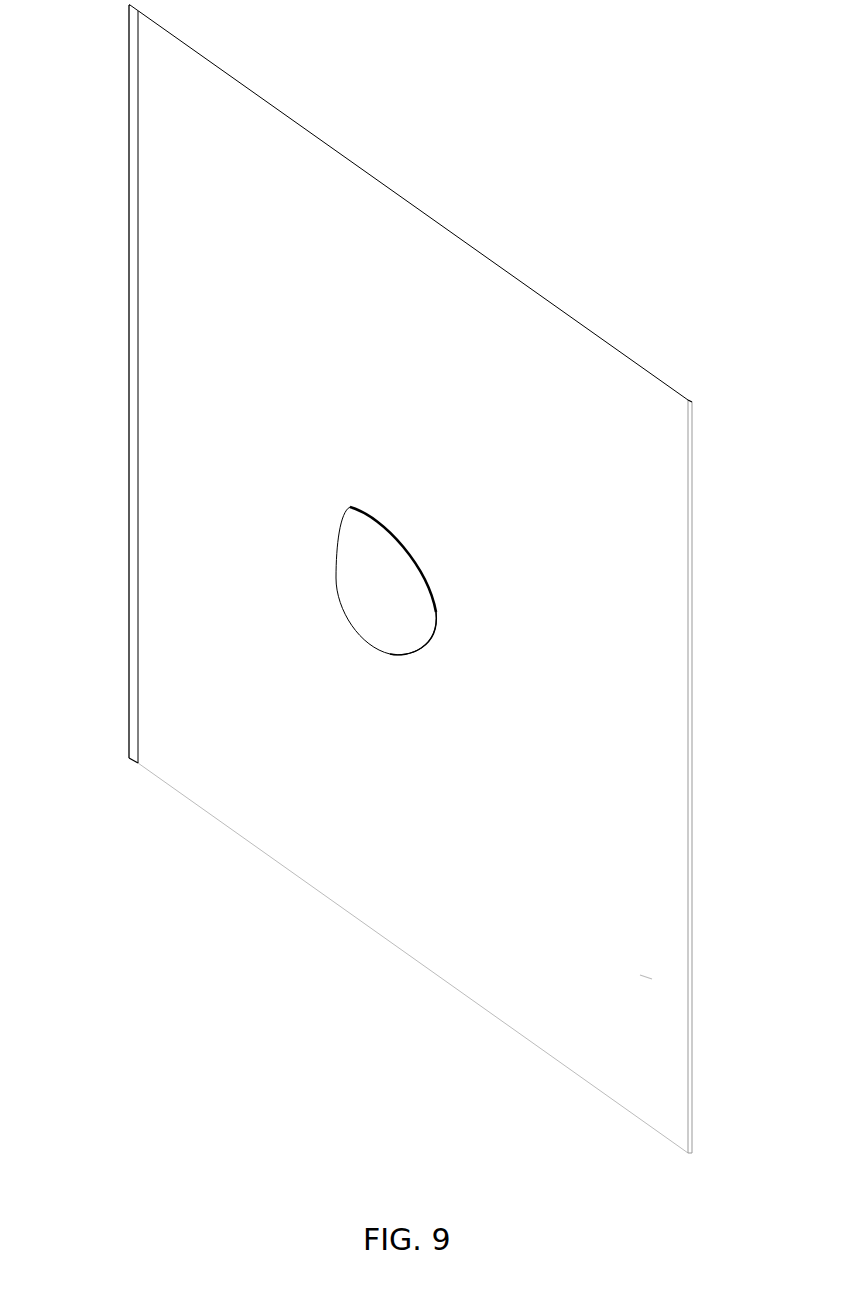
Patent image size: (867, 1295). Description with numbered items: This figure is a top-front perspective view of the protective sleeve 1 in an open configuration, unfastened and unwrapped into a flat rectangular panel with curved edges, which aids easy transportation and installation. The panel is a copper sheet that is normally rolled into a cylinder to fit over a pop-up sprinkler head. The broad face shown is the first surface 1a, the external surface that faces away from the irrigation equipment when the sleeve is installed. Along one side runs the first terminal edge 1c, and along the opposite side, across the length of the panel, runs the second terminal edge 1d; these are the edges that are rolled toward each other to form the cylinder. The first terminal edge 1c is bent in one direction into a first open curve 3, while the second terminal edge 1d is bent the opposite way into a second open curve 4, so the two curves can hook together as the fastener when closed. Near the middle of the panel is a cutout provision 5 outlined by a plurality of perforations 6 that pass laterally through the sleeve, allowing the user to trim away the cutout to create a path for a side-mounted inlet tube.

The protective sleeve 1 is at (667, 545).
The first surface 1a is at (649, 977).
The first terminal edge 1c is at (127, 293).
The second terminal edge 1d is at (694, 734).
The first open curve 3 is at (130, 6).
The second open curve 4 is at (688, 400).
The cutout provision 5 is at (373, 557).
The plurality of perforations 6 is at (352, 503).